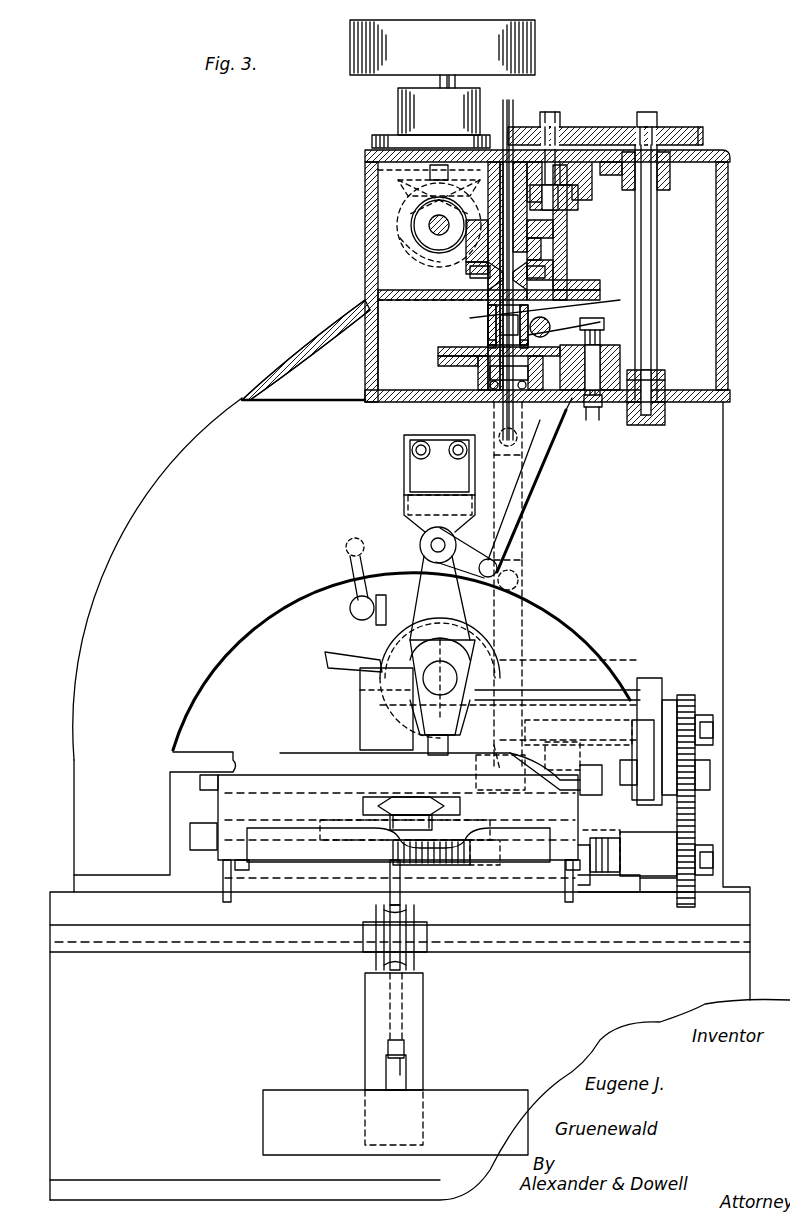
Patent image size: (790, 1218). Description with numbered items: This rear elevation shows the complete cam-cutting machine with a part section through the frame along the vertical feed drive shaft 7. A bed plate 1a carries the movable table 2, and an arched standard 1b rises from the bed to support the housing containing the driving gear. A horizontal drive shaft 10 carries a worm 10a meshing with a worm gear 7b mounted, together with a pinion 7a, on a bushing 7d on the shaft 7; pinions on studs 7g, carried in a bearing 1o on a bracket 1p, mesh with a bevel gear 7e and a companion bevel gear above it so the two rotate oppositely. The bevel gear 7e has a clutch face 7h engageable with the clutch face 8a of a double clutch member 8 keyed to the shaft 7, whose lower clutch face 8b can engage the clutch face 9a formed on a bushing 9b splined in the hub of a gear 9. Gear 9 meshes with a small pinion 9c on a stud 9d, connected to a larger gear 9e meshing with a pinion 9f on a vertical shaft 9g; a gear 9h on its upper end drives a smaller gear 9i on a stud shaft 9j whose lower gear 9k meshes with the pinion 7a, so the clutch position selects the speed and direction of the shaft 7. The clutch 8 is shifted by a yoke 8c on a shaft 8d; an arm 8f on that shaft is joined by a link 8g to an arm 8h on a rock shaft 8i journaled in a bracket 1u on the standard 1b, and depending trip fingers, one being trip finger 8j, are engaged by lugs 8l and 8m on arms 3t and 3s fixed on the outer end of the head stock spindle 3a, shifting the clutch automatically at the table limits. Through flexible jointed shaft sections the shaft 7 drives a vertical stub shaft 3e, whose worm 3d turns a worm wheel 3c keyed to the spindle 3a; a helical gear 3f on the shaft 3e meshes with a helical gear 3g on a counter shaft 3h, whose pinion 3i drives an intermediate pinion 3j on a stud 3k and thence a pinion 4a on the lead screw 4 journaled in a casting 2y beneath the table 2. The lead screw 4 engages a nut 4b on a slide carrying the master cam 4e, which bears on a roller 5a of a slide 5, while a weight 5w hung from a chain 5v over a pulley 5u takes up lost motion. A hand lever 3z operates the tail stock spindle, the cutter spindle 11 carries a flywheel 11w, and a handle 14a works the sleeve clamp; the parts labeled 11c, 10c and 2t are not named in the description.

The flywheel 11w is at (537, 52).
The spindle 11 is at (445, 80).
The housing cover 11c is at (382, 170).
The horizontal drive shaft 10 is at (425, 228).
The worm 10a is at (415, 245).
The gear 10c is at (422, 262).
The vertically disposed shaft 7 is at (520, 160).
The pinion 7a is at (498, 160).
The bushing 7d is at (532, 140).
The stud shaft 9j is at (556, 140).
The smaller gear 9i is at (580, 128).
The gear 9h is at (695, 128).
The gear 9k is at (572, 200).
The worm gear 7b is at (556, 232).
The bearing 1o is at (540, 255).
The bevel gear 7e is at (585, 285).
The studs 7g is at (545, 268).
The yoke 8c is at (620, 250).
The vertical shaft 9g is at (658, 232).
The bracket 1p is at (410, 300).
The clutch face 8a is at (490, 318).
The clutch face 7h is at (500, 312).
The double clutch member 8 is at (488, 336).
The clutch face 8b is at (490, 342).
The shaft 8d is at (558, 322).
The clutch face 9a is at (594, 338).
The small pinion 9c is at (606, 355).
The gear 9 is at (438, 356).
The bushing 9b is at (478, 378).
The larger gear 9e is at (630, 368).
The pinion 9f is at (666, 378).
The stud 9d is at (592, 410).
The standard 1b is at (122, 528).
The bed plate 1a is at (420, 801).
The vertical stub shaft 3e is at (562, 612).
The bracket 1u is at (404, 482).
The rock shaft 8i is at (420, 545).
The trip finger 8j is at (428, 568).
The arm 8h is at (470, 565).
The link 8g is at (548, 455).
The arm 8f is at (522, 400).
The handle 14a is at (350, 602).
The lug 8l is at (430, 615).
The arm 3s is at (410, 635).
The hand lever 3z is at (325, 658).
The spindle 3a is at (425, 678).
The worm wheel 3c is at (362, 700).
The arm 3t is at (420, 712).
The lug 8m is at (428, 742).
The worm 3d is at (560, 685).
The hub 2t is at (605, 690).
The counter shaft 3h is at (545, 728).
The pinion 3i is at (686, 696).
The stud 3k is at (710, 785).
The intermediate pinion 3j is at (677, 820).
The casting 2y is at (600, 892).
The pinion 4a is at (680, 900).
The movable table 2 is at (290, 753).
The helical gear 3f is at (490, 760).
The helical gear 3g is at (540, 746).
The lead screw 4 is at (372, 865).
The slide 5 is at (412, 797).
The roller 5a is at (398, 815).
The master cam 4e is at (470, 820).
The nut 4b is at (440, 868).
The pulley 5u is at (368, 962).
The chain 5v is at (420, 1010).
The weight 5w is at (325, 1100).